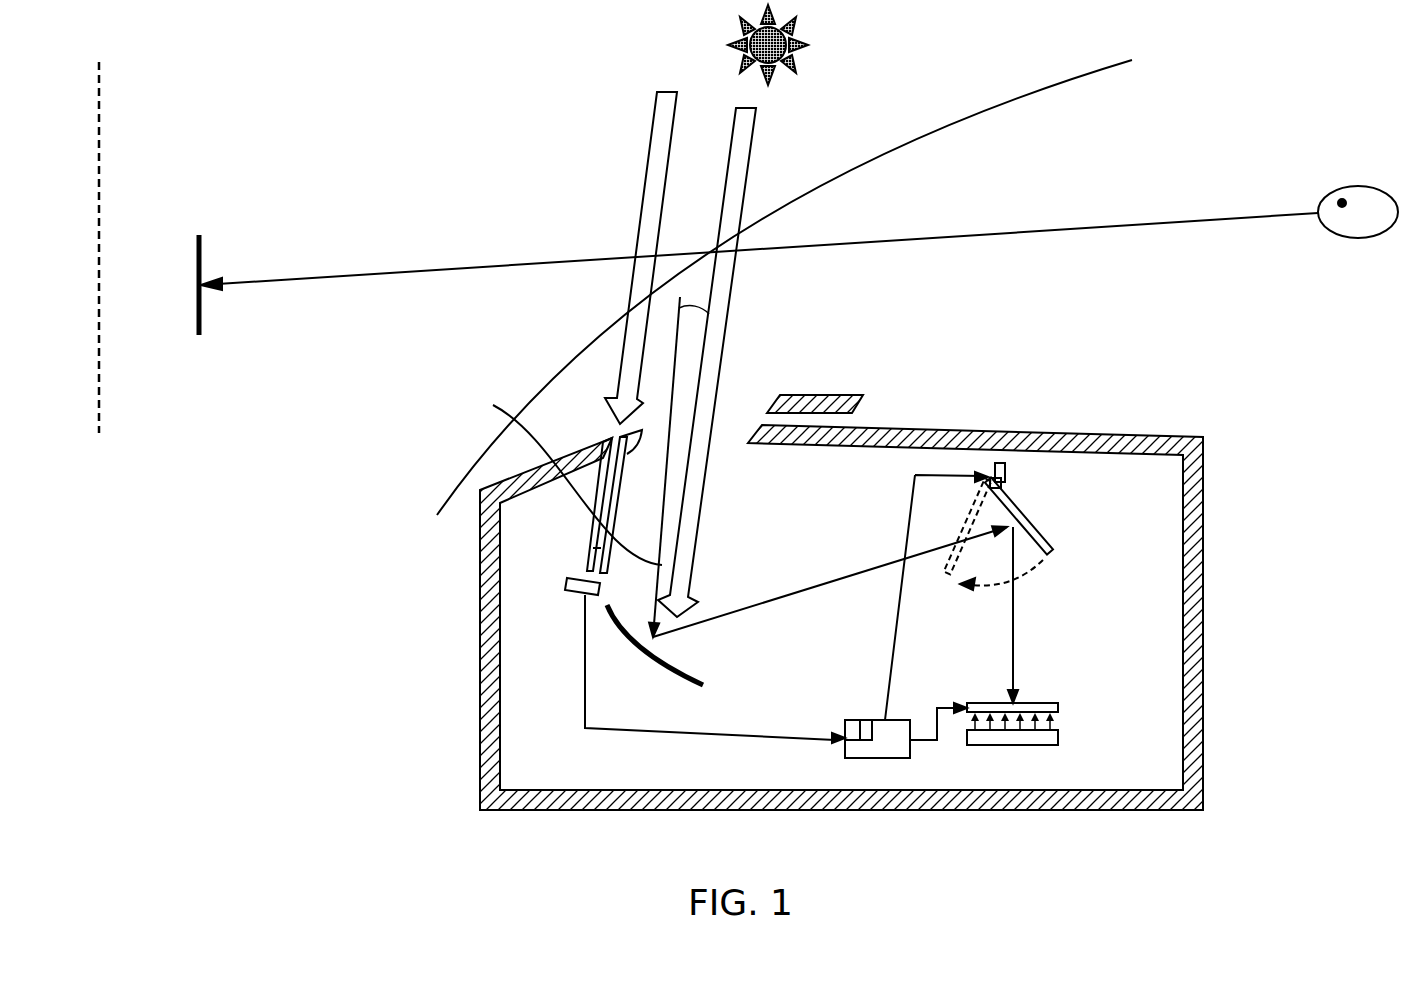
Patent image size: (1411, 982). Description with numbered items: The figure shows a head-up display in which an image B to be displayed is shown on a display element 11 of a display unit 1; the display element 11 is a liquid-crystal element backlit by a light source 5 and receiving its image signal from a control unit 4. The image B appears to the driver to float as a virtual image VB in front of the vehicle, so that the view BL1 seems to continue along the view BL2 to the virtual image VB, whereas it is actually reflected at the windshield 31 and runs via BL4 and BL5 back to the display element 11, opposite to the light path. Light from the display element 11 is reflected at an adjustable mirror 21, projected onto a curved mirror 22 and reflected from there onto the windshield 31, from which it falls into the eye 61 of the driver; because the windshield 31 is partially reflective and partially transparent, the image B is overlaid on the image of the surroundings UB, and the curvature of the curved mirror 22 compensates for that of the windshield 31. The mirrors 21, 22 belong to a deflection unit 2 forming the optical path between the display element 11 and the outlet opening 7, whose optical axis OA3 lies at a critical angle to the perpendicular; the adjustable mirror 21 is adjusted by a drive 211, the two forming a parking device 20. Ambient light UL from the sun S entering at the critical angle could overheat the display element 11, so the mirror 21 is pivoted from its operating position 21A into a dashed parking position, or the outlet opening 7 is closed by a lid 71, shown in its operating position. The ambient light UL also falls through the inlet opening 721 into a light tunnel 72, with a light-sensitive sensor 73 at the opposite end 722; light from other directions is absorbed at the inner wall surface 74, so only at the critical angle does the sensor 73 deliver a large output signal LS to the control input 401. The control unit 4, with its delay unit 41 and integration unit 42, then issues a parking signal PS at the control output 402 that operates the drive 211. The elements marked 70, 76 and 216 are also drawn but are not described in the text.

The display unit 1 is at (1056, 706).
The deflection unit 2 is at (983, 482).
The control unit 4 is at (876, 763).
The light source 5 is at (1060, 737).
The outlet opening 7 is at (740, 420).
The display element 11 is at (1070, 703).
The parking device 20 is at (1015, 480).
The adjustable mirror 21 is at (1022, 520).
The operating position 21A is at (993, 534).
The curved mirror 22 is at (667, 675).
The windshield 31 is at (1055, 92).
The delay unit 41 is at (850, 728).
The integration unit 42 is at (867, 722).
The eye 61 is at (1363, 212).
The housing 70 is at (1200, 485).
The lid 71 is at (820, 395).
The light tunnel 72 is at (592, 522).
The light-sensitive sensor 73 is at (565, 588).
The wall surface 74 is at (588, 550).
The top wall of housing 76 is at (793, 435).
The drive 211 is at (1000, 463).
The mirror rotation path 216 is at (960, 530).
The control input 401 is at (845, 745).
The control output 402 is at (877, 722).
The inlet opening 721 is at (610, 440).
The end 722 is at (588, 572).
The sun S is at (733, 43).
The ambient light UL is at (757, 143).
The view BL1 is at (1192, 222).
The view to the virtual image BL2 is at (285, 281).
The beam path section BL4 is at (773, 601).
The beam path section BL5 is at (1013, 607).
The optical axis OA3 is at (529, 477).
The parking signal PS is at (936, 596).
The output signal LS is at (706, 679).
The image B is at (1045, 702).
The image of the surroundings UB is at (98, 237).
The virtual image VB is at (197, 260).